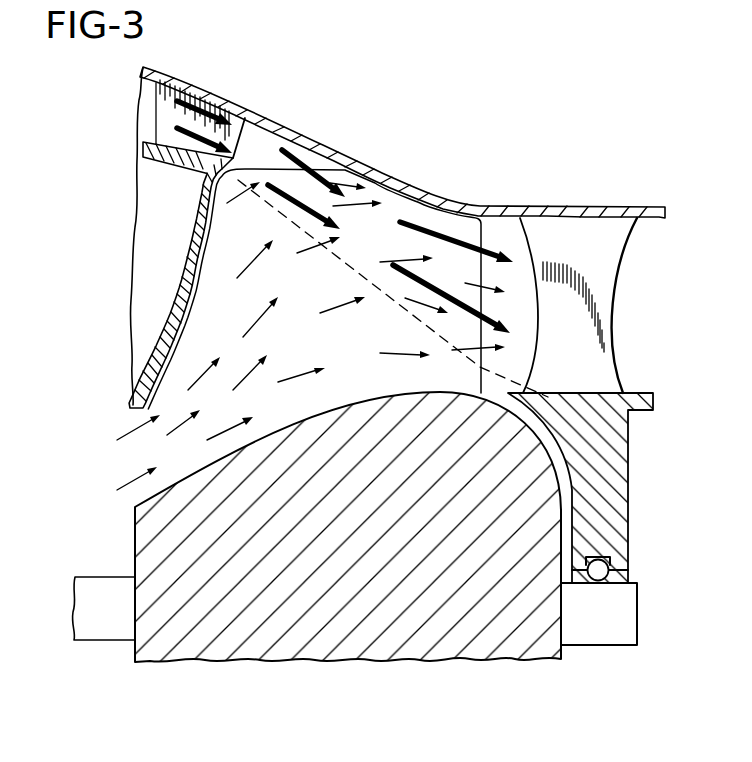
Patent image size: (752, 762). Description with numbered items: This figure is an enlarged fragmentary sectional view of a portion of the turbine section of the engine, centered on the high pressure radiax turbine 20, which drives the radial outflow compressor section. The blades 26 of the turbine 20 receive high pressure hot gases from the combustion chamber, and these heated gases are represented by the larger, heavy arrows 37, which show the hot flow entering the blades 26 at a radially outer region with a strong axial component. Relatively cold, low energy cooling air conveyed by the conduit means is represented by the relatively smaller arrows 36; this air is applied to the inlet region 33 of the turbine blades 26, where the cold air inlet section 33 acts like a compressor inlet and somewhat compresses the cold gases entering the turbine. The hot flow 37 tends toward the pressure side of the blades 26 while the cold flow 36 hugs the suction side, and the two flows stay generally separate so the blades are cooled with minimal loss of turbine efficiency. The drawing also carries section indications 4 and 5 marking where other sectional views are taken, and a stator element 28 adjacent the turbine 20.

The radiax turbine 20 is at (398, 575).
The turbine blades 26 is at (307, 284).
The stator vane 28 is at (604, 303).
The inlet region of the turbine blades 33 is at (145, 455).
The relatively smaller arrows 36 is at (283, 381).
The larger arrows 37 is at (296, 160).
The section line 4- 4 is at (199, 443).
The section line 5- 5 is at (551, 227).